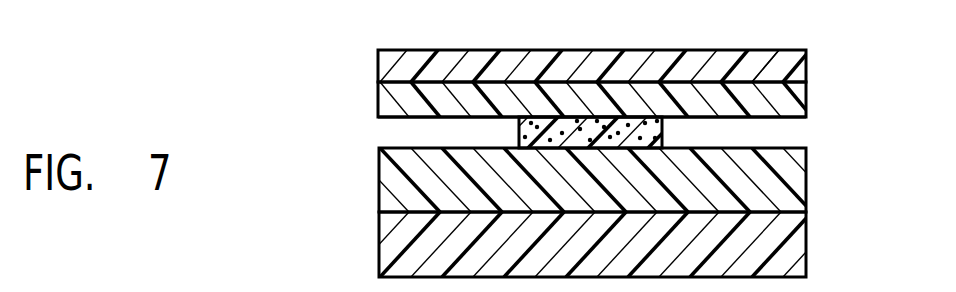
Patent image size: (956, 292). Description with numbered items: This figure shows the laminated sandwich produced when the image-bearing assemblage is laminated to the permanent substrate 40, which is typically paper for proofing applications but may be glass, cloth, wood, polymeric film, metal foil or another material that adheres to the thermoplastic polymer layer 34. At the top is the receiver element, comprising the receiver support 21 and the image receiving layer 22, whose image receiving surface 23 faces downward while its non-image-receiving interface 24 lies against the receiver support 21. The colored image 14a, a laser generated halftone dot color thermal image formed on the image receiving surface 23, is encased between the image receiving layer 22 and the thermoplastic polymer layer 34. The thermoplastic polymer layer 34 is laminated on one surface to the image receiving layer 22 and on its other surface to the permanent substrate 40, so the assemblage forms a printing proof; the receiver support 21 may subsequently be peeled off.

The colored image 14a is at (663, 128).
The receiver support 21 is at (806, 67).
The image receiving layer 22 is at (806, 100).
The image receiving surface 23 is at (623, 132).
The non-image-receiving interface 24 is at (810, 49).
The thermoplastic polymer layer 34 is at (806, 181).
The permanent substrate 40 is at (806, 245).